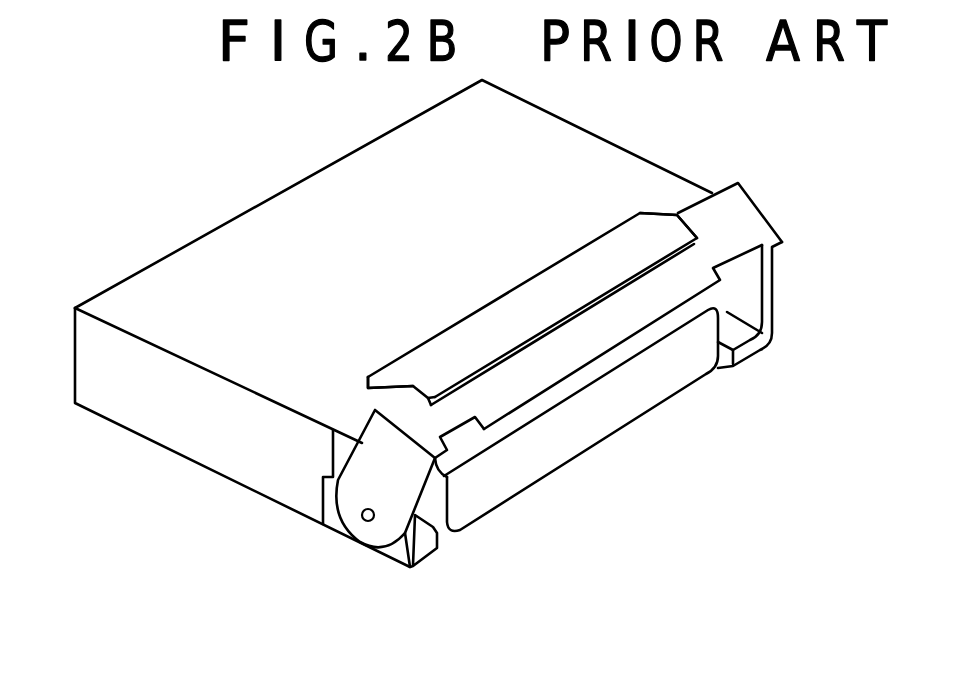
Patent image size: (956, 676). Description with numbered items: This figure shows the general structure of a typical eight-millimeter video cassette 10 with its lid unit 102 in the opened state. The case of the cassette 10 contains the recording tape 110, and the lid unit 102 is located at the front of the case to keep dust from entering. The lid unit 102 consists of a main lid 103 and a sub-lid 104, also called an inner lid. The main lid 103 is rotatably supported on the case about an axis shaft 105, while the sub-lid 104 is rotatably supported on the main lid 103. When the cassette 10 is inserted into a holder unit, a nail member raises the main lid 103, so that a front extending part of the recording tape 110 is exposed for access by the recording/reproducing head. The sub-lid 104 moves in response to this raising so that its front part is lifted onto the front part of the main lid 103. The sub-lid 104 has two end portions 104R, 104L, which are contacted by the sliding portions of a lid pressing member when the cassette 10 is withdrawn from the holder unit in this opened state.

The cassette 10 is at (128, 170).
The lid unit 102 is at (753, 172).
The main lid 103 is at (733, 223).
The sub-lid 104 is at (527, 297).
The end portion of sub-lid 104L is at (660, 233).
The end portion of sub-lid 104R is at (410, 372).
The axis shaft 105 is at (362, 518).
The recording tape 110 is at (678, 380).